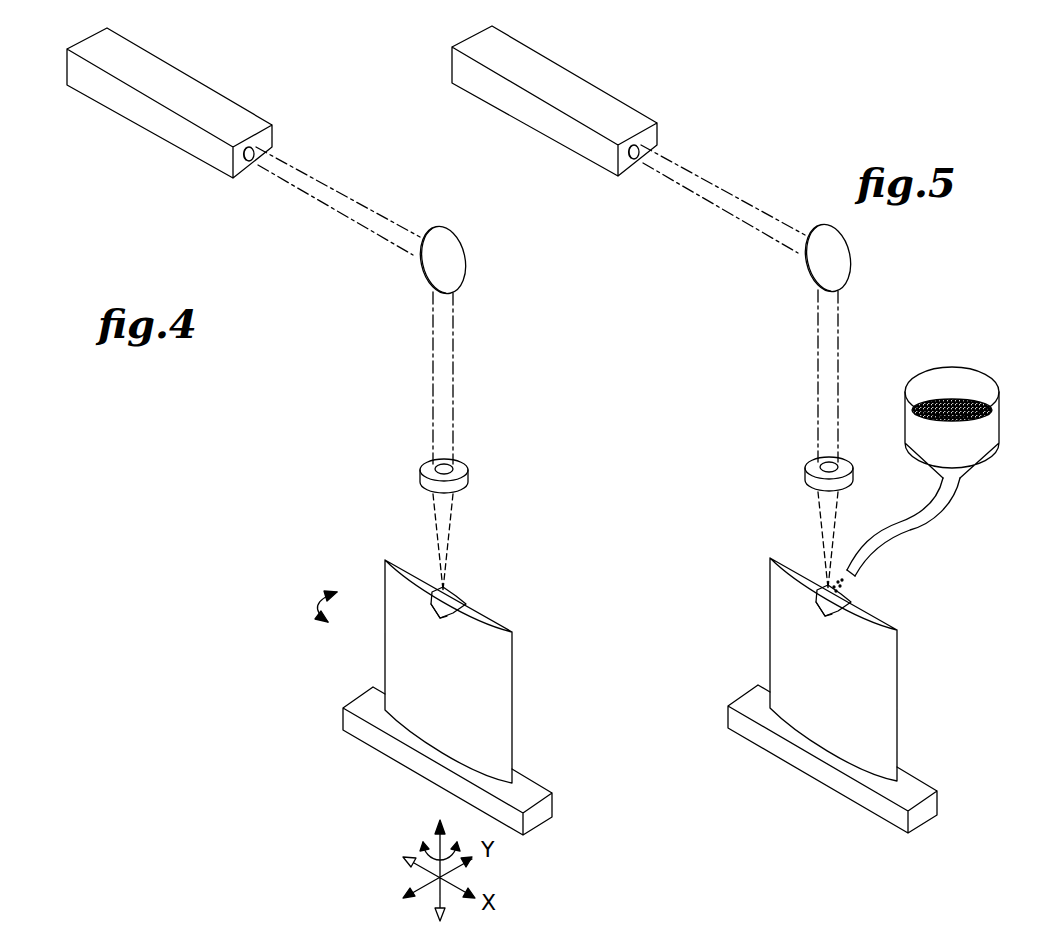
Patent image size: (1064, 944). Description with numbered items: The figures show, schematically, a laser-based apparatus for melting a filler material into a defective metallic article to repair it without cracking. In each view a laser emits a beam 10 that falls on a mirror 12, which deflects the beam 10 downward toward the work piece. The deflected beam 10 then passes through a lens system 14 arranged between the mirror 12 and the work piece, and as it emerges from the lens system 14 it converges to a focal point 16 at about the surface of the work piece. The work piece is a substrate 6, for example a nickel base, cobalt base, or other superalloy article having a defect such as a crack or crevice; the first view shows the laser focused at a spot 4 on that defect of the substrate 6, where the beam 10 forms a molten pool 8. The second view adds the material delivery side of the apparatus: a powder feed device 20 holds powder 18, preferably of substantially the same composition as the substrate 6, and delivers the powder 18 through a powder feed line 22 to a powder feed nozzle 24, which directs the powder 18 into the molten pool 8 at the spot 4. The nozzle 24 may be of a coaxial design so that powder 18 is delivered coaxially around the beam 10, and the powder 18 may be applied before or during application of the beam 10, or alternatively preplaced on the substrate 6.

In FIG. 4, the spot 4 is at (444, 590).
In FIG. 5, the spot 4 is at (824, 583).
In FIG. 4, the substrate 6 is at (477, 717).
In FIG. 5, the substrate 6 is at (851, 669).
In FIG. 4, the molten pool 8 is at (437, 612).
In FIG. 5, the molten pool 8 is at (820, 627).
In FIG. 4, the beam 10 is at (331, 190).
In FIG. 5, the beam 10 is at (739, 303).
In FIG. 4, the mirror 12 is at (456, 259).
In FIG. 5, the mirror 12 is at (857, 258).
In FIG. 4, the lens system 14 is at (442, 469).
In FIG. 5, the lens system 14 is at (845, 464).
In FIG. 4, the focal point 16 is at (443, 569).
In FIG. 5, the focal point 16 is at (809, 540).
In FIG. 5, the powder 18 is at (975, 405).
In FIG. 5, the powder feed device 20 is at (983, 433).
In FIG. 5, the powder feed line 22 is at (933, 518).
In FIG. 5, the powder feed nozzle 24 is at (848, 572).